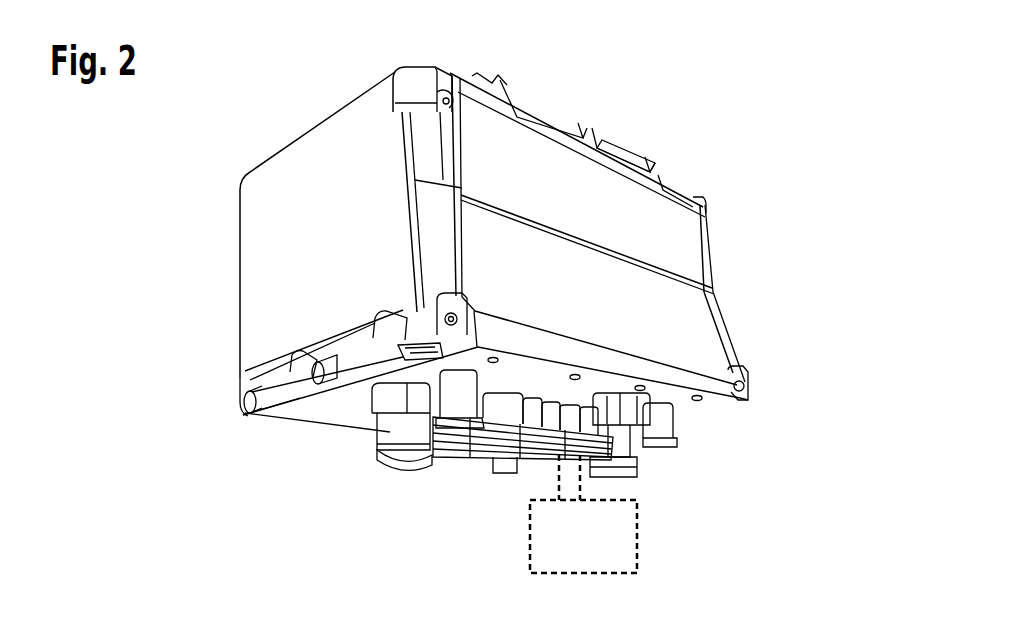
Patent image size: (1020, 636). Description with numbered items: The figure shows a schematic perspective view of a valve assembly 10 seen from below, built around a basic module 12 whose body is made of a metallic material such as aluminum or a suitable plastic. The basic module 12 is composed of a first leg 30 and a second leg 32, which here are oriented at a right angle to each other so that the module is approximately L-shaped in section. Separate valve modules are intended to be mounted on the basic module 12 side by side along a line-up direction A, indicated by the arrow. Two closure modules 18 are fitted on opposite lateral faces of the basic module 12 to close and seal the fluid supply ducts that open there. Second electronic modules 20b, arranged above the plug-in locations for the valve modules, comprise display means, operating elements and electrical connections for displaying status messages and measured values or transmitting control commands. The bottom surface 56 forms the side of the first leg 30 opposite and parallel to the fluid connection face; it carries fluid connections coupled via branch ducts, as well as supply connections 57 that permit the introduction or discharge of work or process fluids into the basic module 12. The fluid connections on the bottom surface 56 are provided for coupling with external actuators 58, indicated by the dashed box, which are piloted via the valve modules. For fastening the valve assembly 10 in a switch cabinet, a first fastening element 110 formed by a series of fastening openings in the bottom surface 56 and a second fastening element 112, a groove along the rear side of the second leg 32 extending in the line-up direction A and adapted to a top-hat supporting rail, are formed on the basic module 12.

The valve assembly 10 is at (798, 97).
The basic module 12 is at (817, 388).
The closure module 18 is at (270, 323).
The second electronic module 20b is at (617, 147).
The first leg 30 is at (291, 432).
The second leg 32 is at (673, 232).
The bottom surface 56 is at (353, 413).
The supply connection 57 is at (403, 470).
The external actuator 58 is at (583, 514).
The first fastening element 110 is at (710, 402).
The second fastening element 112 is at (680, 313).
The line-up direction A is at (305, 247).